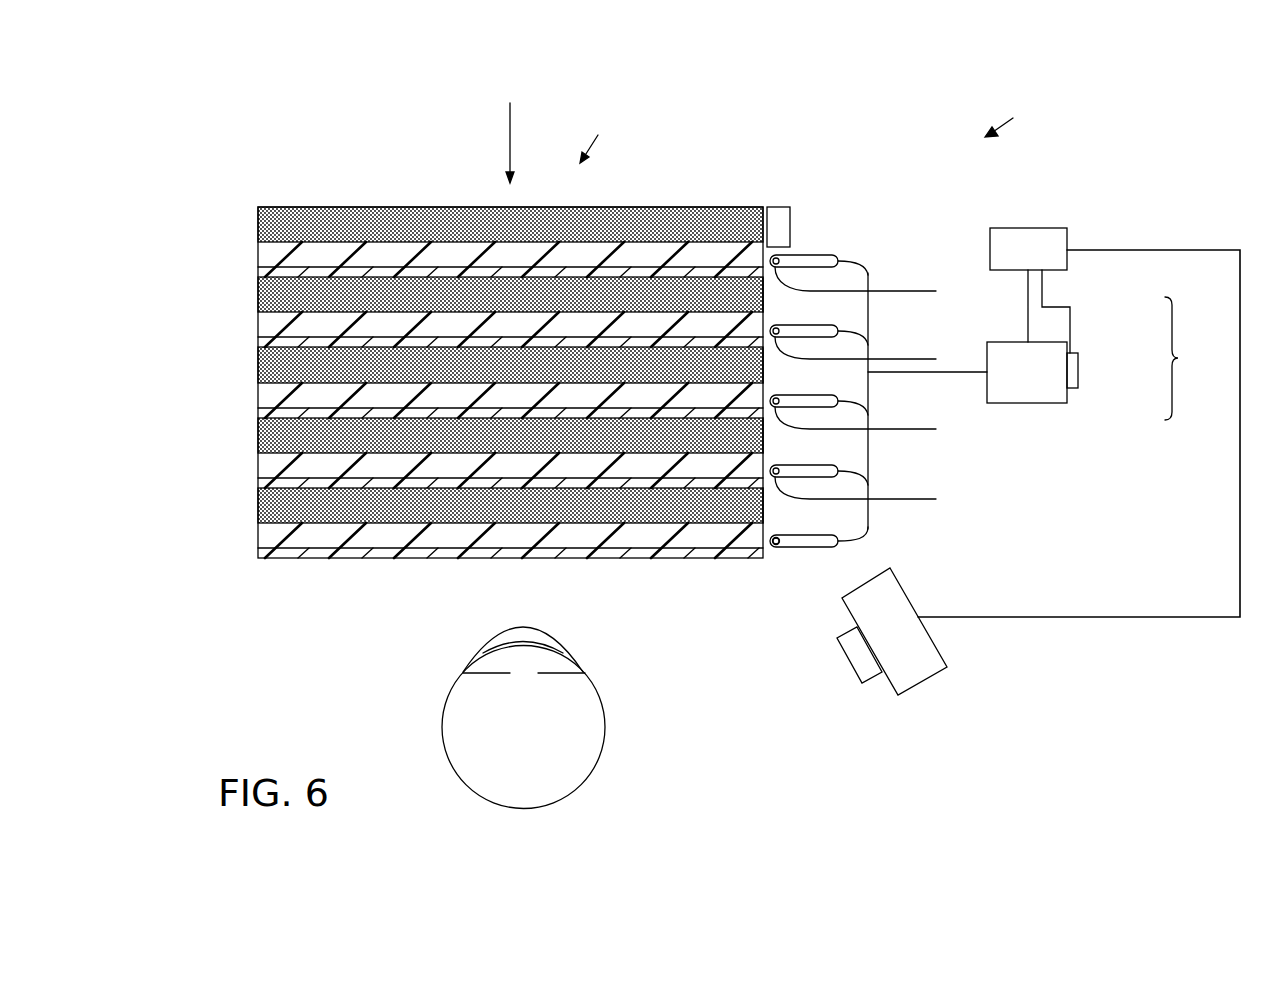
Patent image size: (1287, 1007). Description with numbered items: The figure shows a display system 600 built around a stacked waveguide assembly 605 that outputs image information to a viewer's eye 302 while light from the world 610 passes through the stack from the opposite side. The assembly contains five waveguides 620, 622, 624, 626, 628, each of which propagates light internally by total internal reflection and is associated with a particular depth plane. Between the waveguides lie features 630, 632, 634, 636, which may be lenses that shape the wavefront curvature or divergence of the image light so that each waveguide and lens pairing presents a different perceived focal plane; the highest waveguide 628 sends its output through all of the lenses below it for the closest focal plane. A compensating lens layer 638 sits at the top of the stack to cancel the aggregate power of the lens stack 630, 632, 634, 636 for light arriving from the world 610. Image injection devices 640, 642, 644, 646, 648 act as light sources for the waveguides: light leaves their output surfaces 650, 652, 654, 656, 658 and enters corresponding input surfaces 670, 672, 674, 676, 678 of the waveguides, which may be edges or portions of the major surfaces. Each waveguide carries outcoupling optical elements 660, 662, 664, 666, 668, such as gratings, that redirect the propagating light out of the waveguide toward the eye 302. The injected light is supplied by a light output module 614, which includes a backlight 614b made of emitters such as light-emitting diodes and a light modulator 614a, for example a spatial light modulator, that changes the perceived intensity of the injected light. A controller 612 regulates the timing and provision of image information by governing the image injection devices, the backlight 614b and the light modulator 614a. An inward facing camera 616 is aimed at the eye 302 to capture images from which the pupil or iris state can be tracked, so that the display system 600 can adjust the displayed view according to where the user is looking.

The display system 600 is at (1022, 122).
The stacked waveguide assembly 605 is at (599, 132).
The world 610 is at (513, 73).
The controller 612 is at (1048, 223).
The light output module 614 is at (1194, 358).
The light modulator 614a is at (1047, 340).
The backlight 614b is at (1080, 360).
The inward facing camera 616 is at (923, 683).
The eye 302 is at (605, 727).
The waveguide 620 is at (258, 540).
The waveguide 622 is at (258, 470).
The waveguide 624 is at (258, 400).
The waveguide 626 is at (258, 329).
The waveguide 628 is at (258, 250).
The lens 630 is at (764, 502).
The lens 632 is at (764, 432).
The lens 634 is at (764, 362).
The lens 636 is at (764, 292).
The compensating lens layer 638 is at (792, 228).
The image injection device 640 is at (845, 539).
The image injection device 642 is at (845, 469).
The image injection device 644 is at (858, 375).
The image injection device 646 is at (845, 329).
The image injection device 648 is at (845, 259).
The output surface 650 is at (775, 551).
The output surface 652 is at (878, 491).
The output surface 654 is at (878, 423).
The output surface 656 is at (878, 351).
The output surface 658 is at (878, 284).
The outcoupling optical element 660 is at (258, 552).
The outcoupling optical element 662 is at (258, 480).
The outcoupling optical element 664 is at (258, 410).
The outcoupling optical element 666 is at (258, 339).
The waveguide 668 is at (258, 268).
The input surface 670 is at (757, 543).
The input surface 672 is at (750, 466).
The input surface 674 is at (757, 385).
The input surface 676 is at (757, 323).
The input surface 678 is at (757, 245).